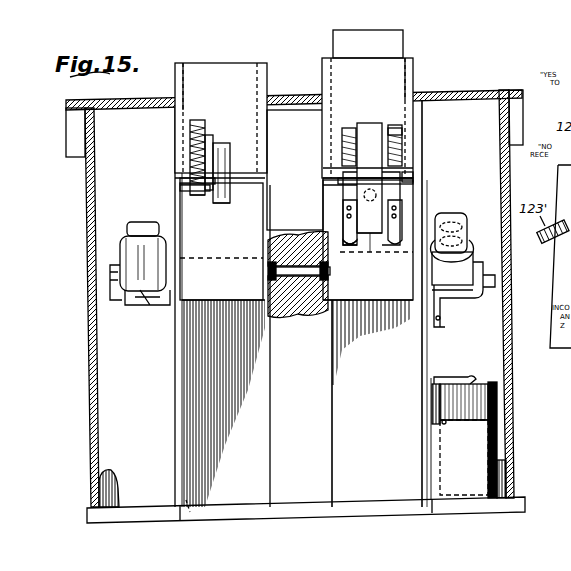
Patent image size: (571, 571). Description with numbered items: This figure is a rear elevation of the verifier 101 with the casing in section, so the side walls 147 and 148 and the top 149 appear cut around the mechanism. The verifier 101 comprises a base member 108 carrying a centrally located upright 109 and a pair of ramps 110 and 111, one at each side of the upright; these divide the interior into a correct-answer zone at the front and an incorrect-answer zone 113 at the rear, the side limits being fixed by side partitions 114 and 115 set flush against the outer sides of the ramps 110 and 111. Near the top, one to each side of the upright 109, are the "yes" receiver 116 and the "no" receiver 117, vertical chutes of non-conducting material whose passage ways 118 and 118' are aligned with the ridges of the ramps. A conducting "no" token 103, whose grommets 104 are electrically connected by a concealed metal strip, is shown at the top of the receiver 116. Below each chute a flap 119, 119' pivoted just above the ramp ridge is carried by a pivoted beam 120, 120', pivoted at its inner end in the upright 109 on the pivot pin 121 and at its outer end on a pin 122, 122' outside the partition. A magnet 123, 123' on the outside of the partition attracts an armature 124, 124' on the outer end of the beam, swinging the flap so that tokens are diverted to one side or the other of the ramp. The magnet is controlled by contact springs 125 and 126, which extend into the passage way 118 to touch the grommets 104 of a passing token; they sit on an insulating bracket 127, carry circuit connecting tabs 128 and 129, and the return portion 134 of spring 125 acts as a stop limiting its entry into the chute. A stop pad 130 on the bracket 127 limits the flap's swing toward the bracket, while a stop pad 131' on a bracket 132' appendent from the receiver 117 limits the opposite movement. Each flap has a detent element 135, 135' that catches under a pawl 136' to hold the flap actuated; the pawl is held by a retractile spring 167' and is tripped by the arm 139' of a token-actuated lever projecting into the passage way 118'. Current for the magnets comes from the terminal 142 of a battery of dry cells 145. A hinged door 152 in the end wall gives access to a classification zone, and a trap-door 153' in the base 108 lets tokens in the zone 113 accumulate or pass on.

The verifier 101 is at (75, 375).
The conducting token 103 is at (386, 32).
The grommets 104 is at (347, 150).
The base member 108 is at (313, 512).
The upright 109 is at (277, 130).
The ramp 110 is at (397, 378).
The ramp 111 is at (254, 493).
The incorrect-answer zone 113 is at (377, 456).
The side partition 114 is at (426, 364).
The side partition 115 is at (174, 370).
The receiver 116 is at (394, 67).
The receiver 117 is at (238, 70).
The passage way 118 is at (443, 73).
The passage way 118' is at (154, 86).
The flap 119 is at (350, 172).
The flap 119' is at (173, 189).
The pivoted beam 120 is at (464, 294).
The pivoted beam 120' is at (141, 316).
The pivot pin 121 is at (307, 303).
The pin 122 is at (512, 284).
The pin 122' is at (81, 290).
The magnet 123 is at (464, 244).
The magnet 123' is at (104, 263).
The armature 124 is at (460, 217).
The armature 124' is at (128, 217).
The contact spring 125 is at (386, 193).
The contact spring 126 is at (345, 208).
The bracket 127 is at (372, 224).
The circuit connecting tab 128 is at (398, 240).
The circuit connecting tab 129 is at (346, 248).
The stop pad 130 is at (340, 188).
The stop pad 131' is at (235, 221).
The bracket 132' is at (231, 158).
The return portion 134 is at (387, 136).
The detent element 135 is at (432, 155).
The detent element 135' is at (163, 169).
The pawl 136' is at (204, 213).
The tripping lever arm 139' is at (207, 144).
The battery terminal 142 is at (445, 425).
The dry cell 145 is at (496, 386).
The side wall 147 is at (514, 454).
The side wall 148 is at (93, 434).
The top 149 is at (68, 102).
The hinged door 152 is at (371, 308).
The trap-door 153' is at (169, 524).
The retractile spring 167' is at (164, 157).